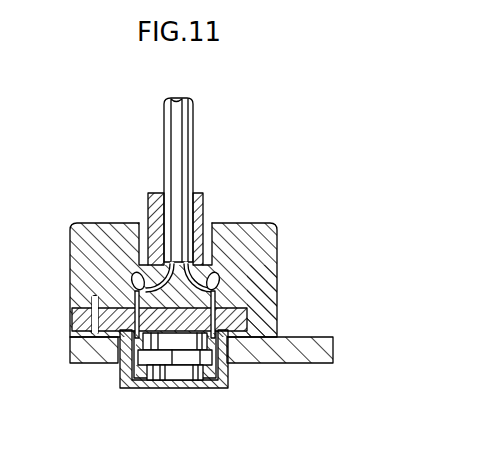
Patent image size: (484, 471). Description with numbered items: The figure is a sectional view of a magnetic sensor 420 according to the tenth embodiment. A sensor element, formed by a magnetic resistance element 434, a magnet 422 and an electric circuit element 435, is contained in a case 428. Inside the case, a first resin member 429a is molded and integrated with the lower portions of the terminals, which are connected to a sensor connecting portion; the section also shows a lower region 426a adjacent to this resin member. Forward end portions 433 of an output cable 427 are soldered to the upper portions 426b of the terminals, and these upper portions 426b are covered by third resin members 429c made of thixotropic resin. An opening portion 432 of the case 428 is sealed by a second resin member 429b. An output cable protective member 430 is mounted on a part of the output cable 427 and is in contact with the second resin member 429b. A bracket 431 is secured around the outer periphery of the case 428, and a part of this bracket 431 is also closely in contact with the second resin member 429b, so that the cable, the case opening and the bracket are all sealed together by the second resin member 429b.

The magnetic sensor 420 is at (126, 166).
The magnet 422 is at (150, 388).
The housing bottom plate 426a is at (246, 307).
The upper portions of the terminals 426b is at (268, 265).
The output cable 427 is at (193, 122).
The case 428 is at (222, 390).
The first resin member 429a is at (114, 323).
The second resin member 429b is at (222, 277).
The third resin members 429c is at (146, 268).
The output cable protective member 430 is at (205, 193).
The bracket 431 is at (335, 352).
The opening portion 432 is at (70, 283).
The forward end portions 433 is at (219, 289).
The magnetic resistance element 434 is at (180, 386).
The electric circuit element 435 is at (118, 370).